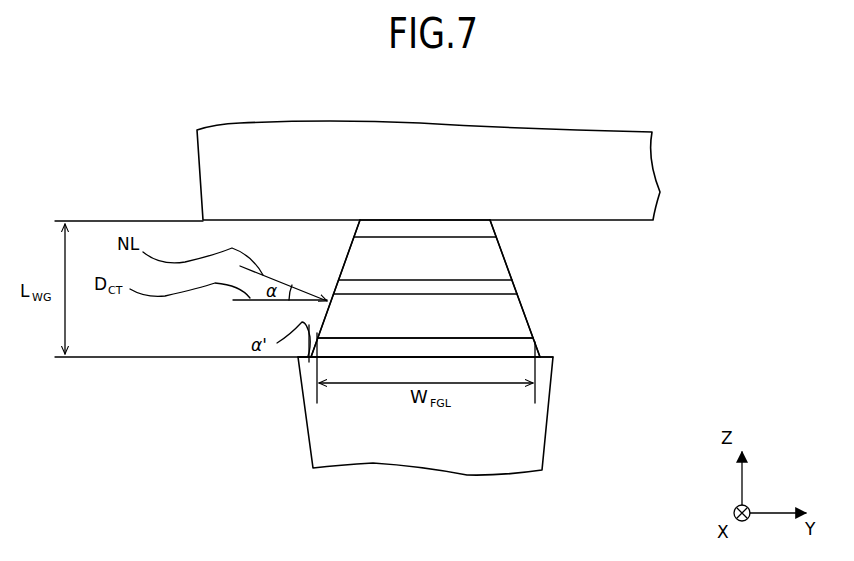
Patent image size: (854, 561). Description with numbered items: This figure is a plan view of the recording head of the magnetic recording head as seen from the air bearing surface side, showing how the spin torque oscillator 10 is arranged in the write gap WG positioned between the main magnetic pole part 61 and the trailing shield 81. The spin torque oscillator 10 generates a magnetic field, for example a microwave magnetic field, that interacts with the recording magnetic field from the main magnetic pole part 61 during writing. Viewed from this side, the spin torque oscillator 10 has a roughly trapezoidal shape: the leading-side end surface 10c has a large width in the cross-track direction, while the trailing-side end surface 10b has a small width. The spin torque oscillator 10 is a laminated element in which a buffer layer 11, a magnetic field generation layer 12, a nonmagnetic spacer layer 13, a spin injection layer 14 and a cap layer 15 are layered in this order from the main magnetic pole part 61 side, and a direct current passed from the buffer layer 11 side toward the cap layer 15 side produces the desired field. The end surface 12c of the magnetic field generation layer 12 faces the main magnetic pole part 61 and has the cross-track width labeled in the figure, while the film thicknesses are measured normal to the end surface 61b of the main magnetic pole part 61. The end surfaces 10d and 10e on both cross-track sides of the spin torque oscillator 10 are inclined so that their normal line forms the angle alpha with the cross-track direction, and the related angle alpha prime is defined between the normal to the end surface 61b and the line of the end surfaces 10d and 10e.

The trailing shield 81 is at (622, 183).
The spin torque oscillator 10 is at (466, 299).
The cap layer 15 is at (483, 228).
The spin injection layer 14 is at (497, 261).
The nonmagnetic spacer layer 13 is at (502, 288).
The magnetic field generation layer 12 is at (522, 328).
The buffer layer 11 is at (505, 367).
The trailing-side end surface 10b is at (390, 220).
The leading-side end surface 10c is at (302, 359).
The end surface 10d is at (322, 314).
The end surface 10e is at (526, 308).
The end surface 12c is at (433, 342).
The main magnetic pole part 61 is at (547, 428).
The end surface 61b is at (553, 355).
The write gap WG is at (330, 241).